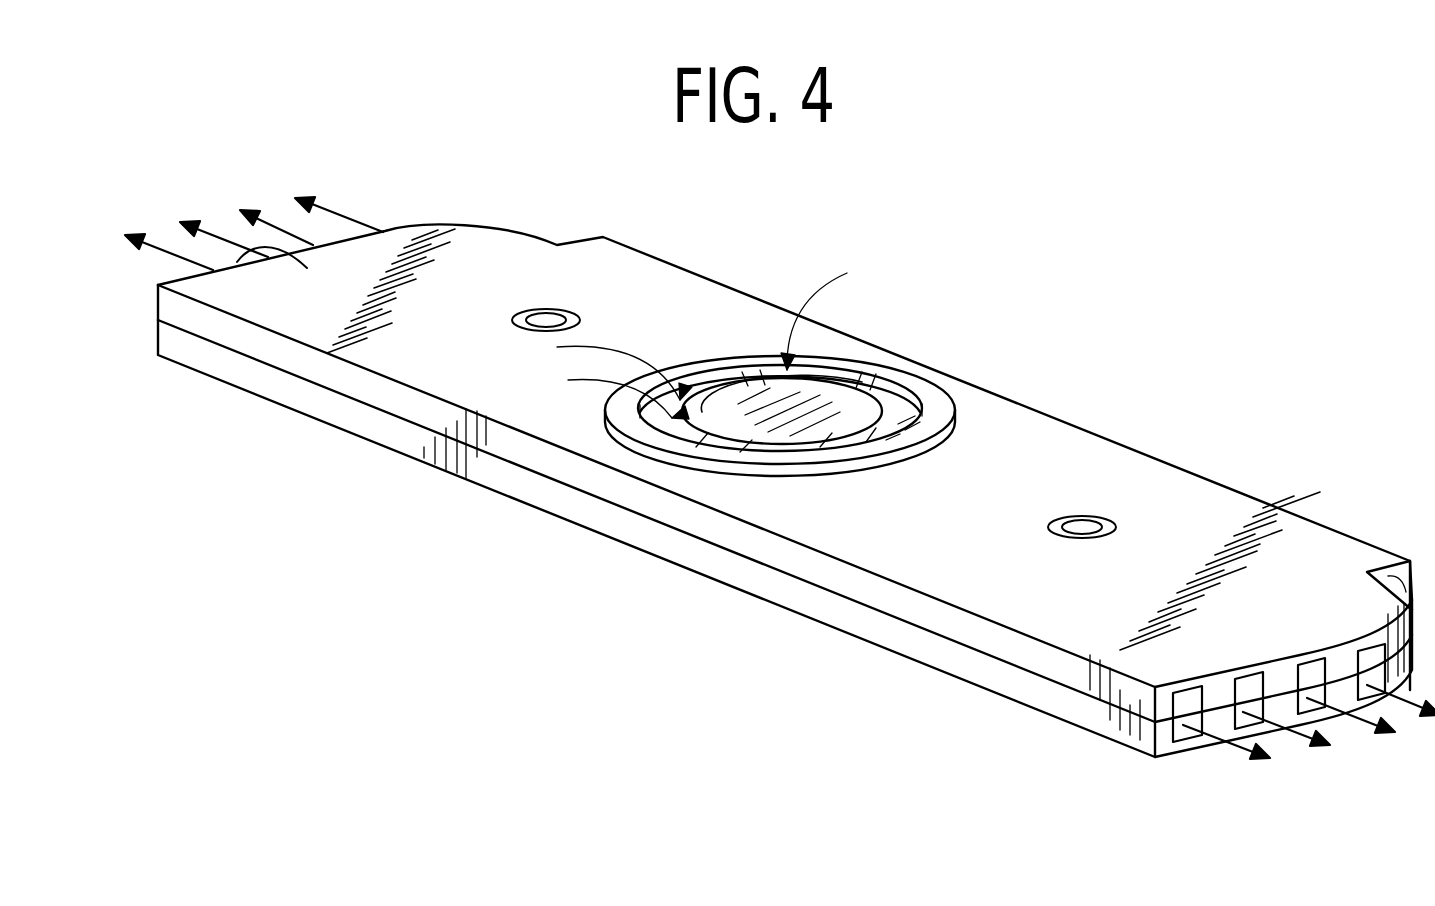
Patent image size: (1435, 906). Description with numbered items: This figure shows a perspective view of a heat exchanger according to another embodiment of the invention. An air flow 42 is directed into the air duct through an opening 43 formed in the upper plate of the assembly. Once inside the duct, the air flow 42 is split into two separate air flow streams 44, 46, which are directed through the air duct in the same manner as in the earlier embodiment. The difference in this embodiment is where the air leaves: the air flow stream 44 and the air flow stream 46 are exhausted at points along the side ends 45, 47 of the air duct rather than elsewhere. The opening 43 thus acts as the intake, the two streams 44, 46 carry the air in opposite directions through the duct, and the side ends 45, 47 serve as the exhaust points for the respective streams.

The air flow 42 is at (900, 400).
The opening 43 is at (820, 440).
The air flow stream 44 is at (260, 218).
The side end 45 is at (307, 268).
The air flow stream 46 is at (1309, 749).
The side end 47 is at (1213, 703).